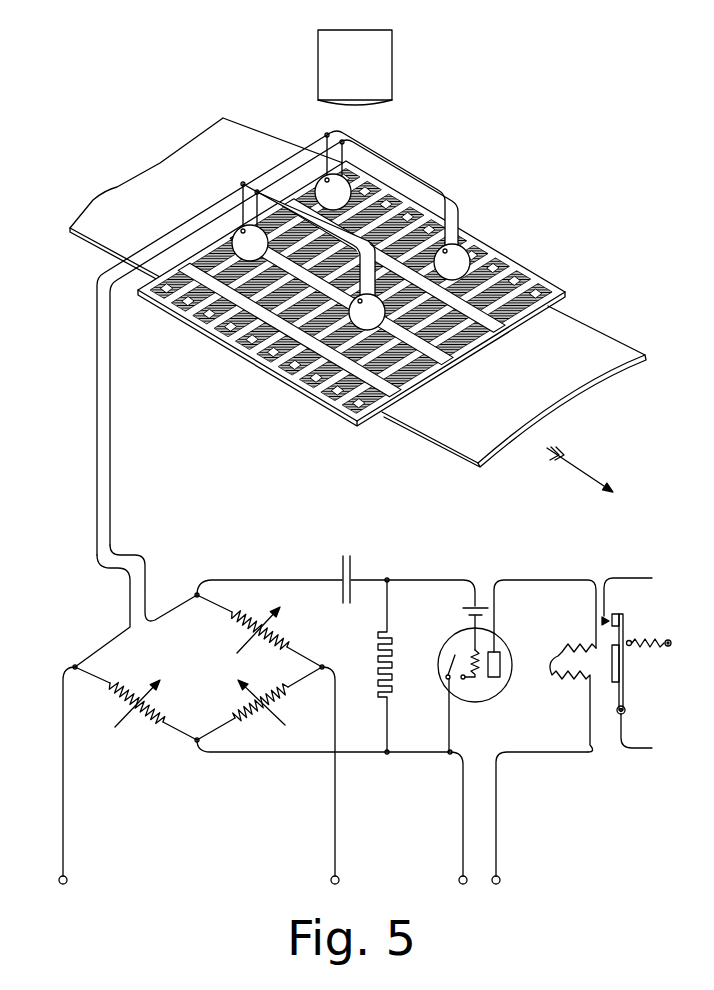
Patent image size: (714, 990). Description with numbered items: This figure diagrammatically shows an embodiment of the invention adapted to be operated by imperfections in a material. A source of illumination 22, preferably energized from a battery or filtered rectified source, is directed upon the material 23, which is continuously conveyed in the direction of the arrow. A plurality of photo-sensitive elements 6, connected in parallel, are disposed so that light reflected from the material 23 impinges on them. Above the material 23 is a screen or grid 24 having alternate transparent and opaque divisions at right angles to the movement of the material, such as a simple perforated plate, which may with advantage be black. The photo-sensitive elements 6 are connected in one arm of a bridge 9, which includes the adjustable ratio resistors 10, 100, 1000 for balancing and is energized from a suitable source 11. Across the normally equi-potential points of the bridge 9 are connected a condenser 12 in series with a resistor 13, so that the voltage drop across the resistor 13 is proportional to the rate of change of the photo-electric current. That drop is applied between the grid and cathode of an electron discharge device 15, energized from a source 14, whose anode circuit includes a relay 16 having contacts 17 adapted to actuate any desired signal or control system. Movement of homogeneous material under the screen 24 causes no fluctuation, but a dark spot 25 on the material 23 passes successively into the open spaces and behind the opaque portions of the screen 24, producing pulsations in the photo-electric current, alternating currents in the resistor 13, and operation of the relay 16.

The source of illumination 22 is at (355, 67).
The material 23 is at (358, 305).
The screen or grid 24 is at (351, 293).
The dark spot 25 is at (205, 310).
The photo-sensitive elements 6 is at (351, 252).
The bridge circuit 9 is at (198, 667).
The ratio resistor 10 is at (132, 703).
The ratio resistor 100 is at (266, 702).
The variable resistor 1000 is at (272, 630).
The source 11 is at (199, 779).
The condenser 12 is at (358, 579).
The resistor 13 is at (375, 666).
The source 14 is at (523, 822).
The electron discharge device 15 is at (506, 666).
The relay 16 is at (641, 681).
The contacts 17 is at (627, 601).